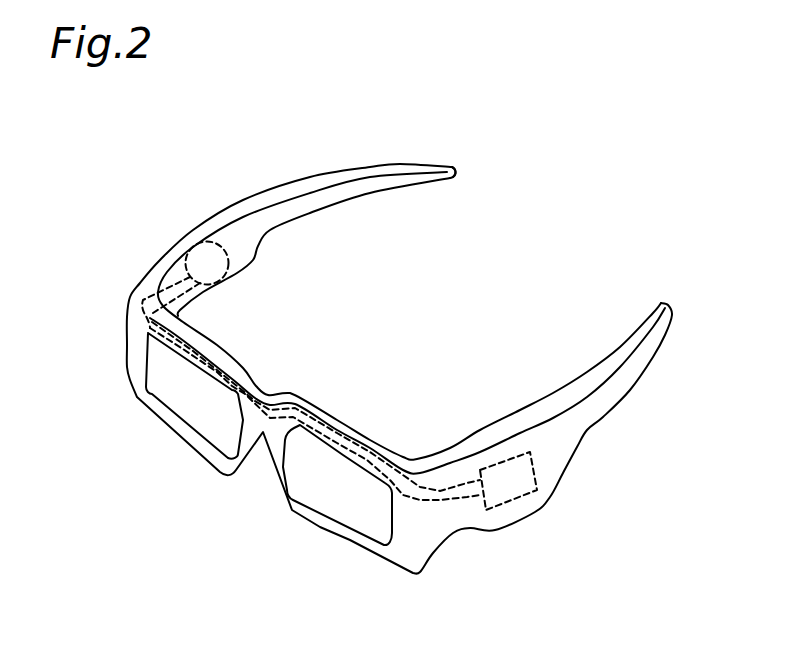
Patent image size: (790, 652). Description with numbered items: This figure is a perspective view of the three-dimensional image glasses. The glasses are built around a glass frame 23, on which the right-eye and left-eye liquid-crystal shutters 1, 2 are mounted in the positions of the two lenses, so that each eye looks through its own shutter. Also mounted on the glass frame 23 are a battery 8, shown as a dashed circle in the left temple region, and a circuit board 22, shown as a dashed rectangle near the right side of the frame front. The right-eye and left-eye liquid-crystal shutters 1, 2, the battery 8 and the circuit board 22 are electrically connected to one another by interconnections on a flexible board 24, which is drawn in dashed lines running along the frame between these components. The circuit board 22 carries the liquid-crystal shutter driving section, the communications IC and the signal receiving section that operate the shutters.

The right-eye liquid-crystal shutter 1 is at (173, 393).
The left-eye liquid-crystal shutter 2 is at (338, 497).
The battery 8 is at (223, 270).
The circuit board 22 is at (537, 492).
The glass frame 23 is at (455, 172).
The flexible board 24 is at (440, 497).